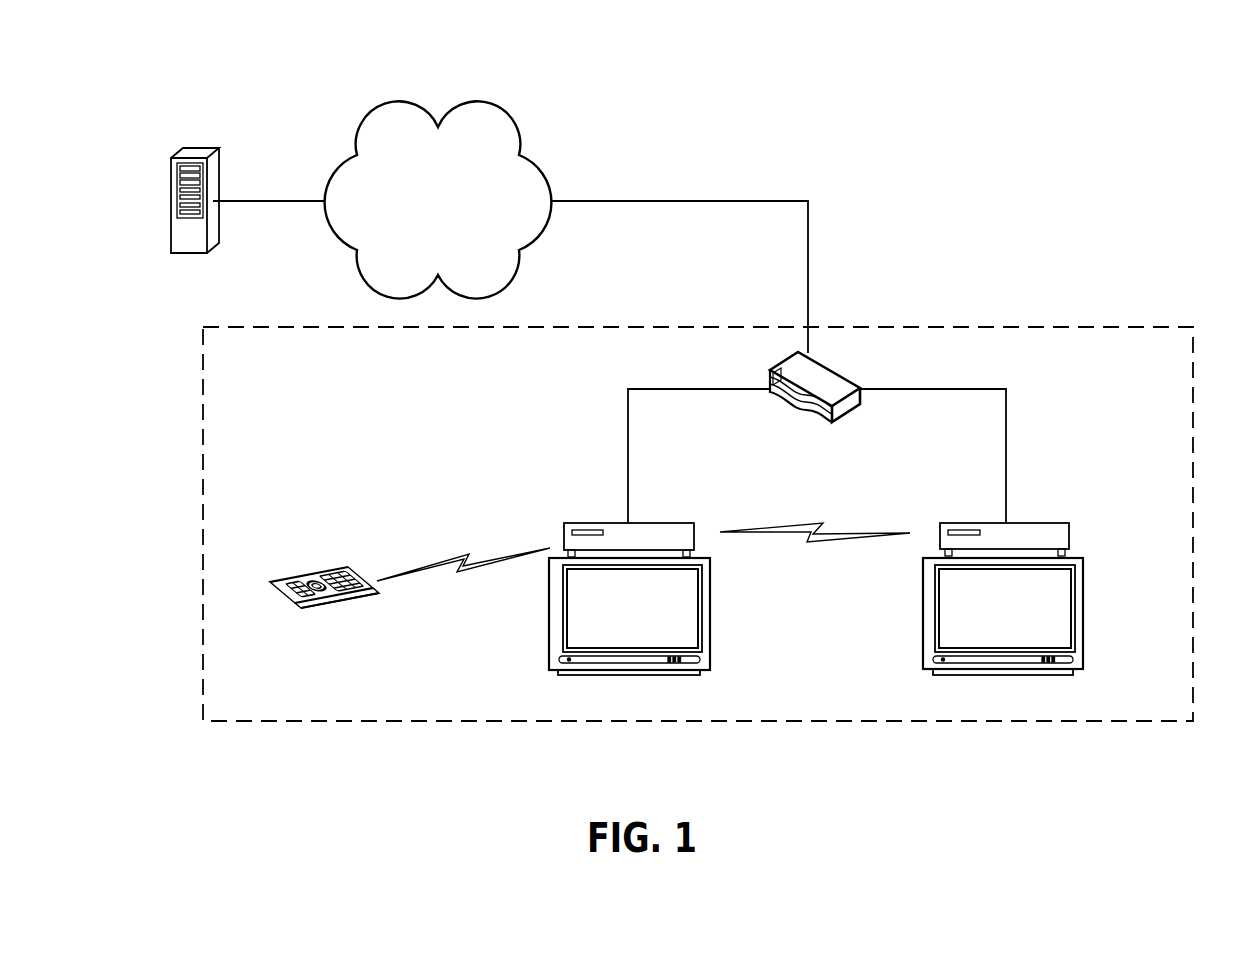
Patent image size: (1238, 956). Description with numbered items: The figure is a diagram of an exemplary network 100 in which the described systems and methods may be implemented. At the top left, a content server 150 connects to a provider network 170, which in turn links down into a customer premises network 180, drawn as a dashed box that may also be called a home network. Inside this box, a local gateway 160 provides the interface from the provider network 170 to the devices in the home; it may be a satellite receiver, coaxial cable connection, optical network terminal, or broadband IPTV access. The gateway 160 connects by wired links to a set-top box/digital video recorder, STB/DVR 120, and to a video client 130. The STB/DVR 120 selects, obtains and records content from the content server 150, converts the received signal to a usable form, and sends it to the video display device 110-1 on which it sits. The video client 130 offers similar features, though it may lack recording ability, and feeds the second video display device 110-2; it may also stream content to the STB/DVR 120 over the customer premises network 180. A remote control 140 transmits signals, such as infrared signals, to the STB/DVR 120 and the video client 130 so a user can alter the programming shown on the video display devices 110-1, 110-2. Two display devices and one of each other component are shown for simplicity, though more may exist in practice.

The network 100 is at (1020, 107).
The content server 150 is at (180, 150).
The provider network 170 is at (458, 236).
The customer premises network 180 is at (996, 327).
The local gateway 160 is at (835, 370).
The set-top box/digital video recorder (STB/DVR) 120 is at (573, 523).
The video client 130 is at (1060, 522).
The video display device 110-1 is at (712, 604).
The video display device 110-2 is at (1085, 605).
The remote control 140 is at (293, 576).